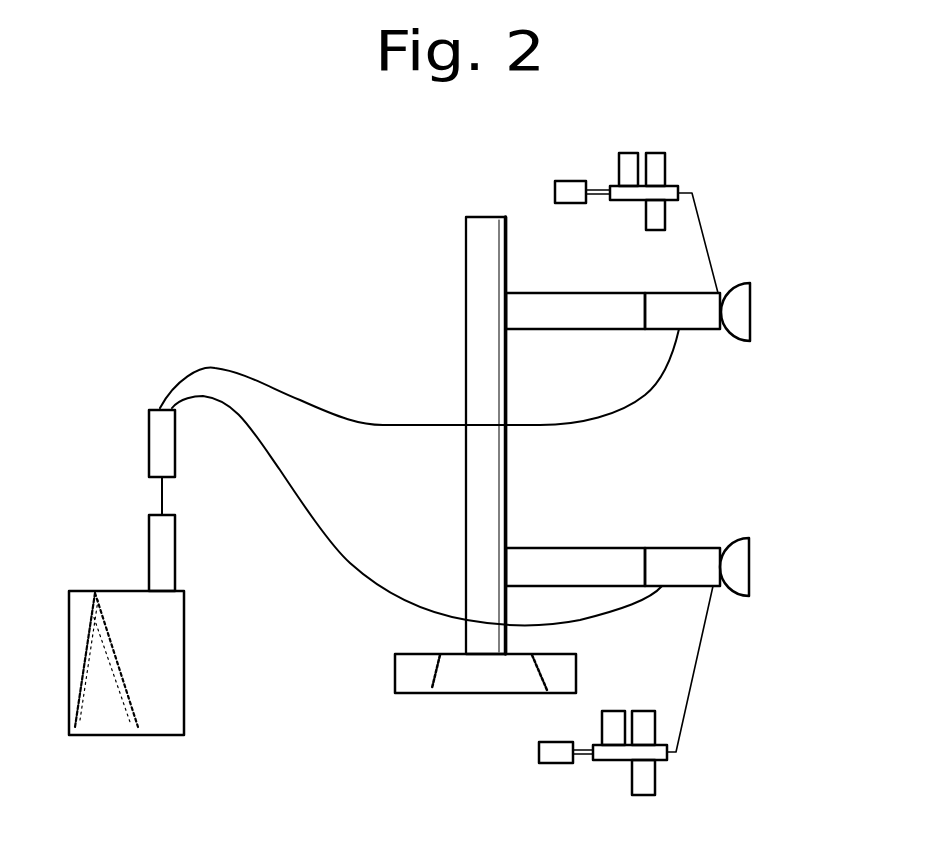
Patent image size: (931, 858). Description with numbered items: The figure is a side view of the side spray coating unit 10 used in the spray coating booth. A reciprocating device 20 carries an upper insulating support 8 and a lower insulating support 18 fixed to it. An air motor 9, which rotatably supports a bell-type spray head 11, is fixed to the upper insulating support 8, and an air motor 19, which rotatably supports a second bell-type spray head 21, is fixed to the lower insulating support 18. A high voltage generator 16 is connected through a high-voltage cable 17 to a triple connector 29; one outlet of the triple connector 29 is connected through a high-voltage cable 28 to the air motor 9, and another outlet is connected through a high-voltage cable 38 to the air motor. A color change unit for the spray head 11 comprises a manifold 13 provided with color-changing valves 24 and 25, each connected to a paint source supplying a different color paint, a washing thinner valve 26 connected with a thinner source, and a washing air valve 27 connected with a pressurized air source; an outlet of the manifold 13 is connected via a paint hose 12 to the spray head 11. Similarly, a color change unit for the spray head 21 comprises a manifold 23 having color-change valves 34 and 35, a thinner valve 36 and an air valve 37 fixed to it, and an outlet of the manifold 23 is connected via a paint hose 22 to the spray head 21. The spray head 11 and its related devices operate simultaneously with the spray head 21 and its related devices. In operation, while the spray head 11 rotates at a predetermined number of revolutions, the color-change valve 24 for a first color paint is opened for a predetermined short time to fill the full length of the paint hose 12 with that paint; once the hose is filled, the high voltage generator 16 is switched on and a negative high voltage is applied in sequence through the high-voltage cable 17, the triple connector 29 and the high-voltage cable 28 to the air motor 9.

The side spray coating unit 10 is at (485, 403).
The reciprocating device 20 is at (466, 260).
The upper insulating support 8 is at (523, 293).
The air motor 9 is at (679, 297).
The spray head 11 is at (748, 285).
The paint hose 12 is at (702, 218).
The manifold 13 is at (612, 184).
The color-changing valve 24 is at (660, 153).
The color-changing valve 25 is at (655, 230).
The washing thinner valve 26 is at (627, 153).
The washing air valve 27 is at (575, 203).
The high-voltage cable 28 is at (657, 385).
The lower insulating support 18 is at (575, 548).
The air motor 19 is at (680, 548).
The spray head 21 is at (743, 590).
The paint hose 22 is at (697, 673).
The manifold 23 is at (598, 745).
The color-change valve 34 is at (645, 711).
The color-change valve 35 is at (645, 795).
The thinner valve 36 is at (608, 711).
The air valve 37 is at (560, 763).
The high-voltage cable 38 is at (638, 607).
The triple connector 29 is at (149, 438).
The high-voltage cable 17 is at (160, 497).
The high voltage generator 16 is at (184, 628).